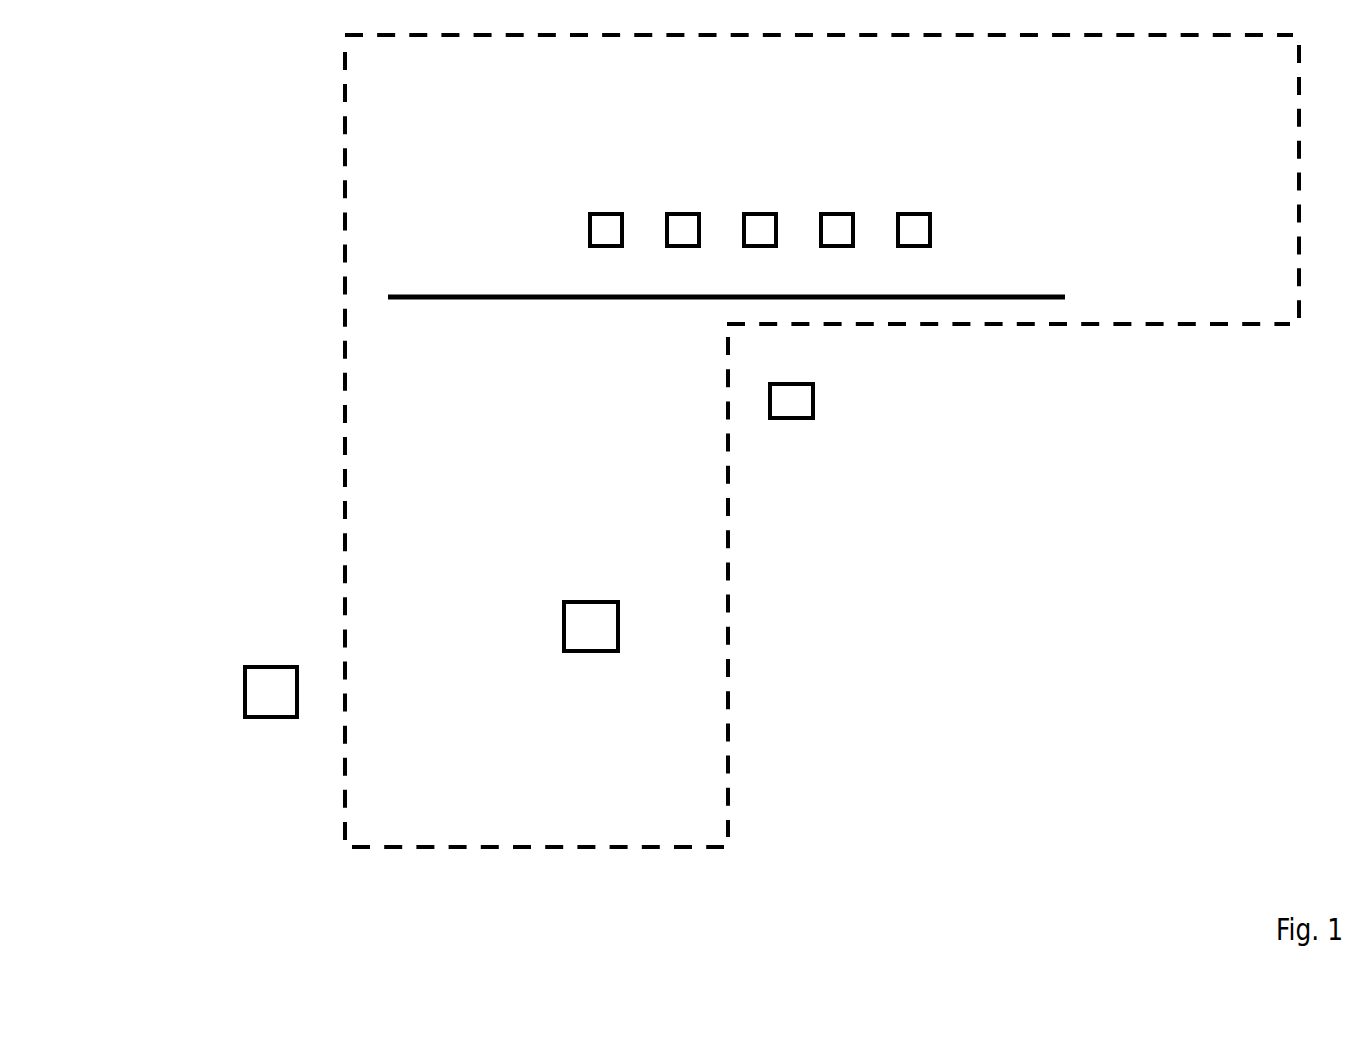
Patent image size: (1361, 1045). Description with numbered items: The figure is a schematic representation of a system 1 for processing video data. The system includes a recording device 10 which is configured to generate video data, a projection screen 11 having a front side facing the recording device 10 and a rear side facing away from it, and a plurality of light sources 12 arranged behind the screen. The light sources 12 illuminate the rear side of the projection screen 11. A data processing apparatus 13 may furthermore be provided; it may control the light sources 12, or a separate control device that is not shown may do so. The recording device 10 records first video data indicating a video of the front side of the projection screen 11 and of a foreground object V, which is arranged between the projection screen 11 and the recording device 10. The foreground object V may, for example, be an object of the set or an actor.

The hydroponic system / installation 1 is at (323, 170).
The recording device 10 is at (582, 653).
The projection screen 11 is at (997, 295).
The light sources 12 is at (609, 212).
The data processing apparatus 13 is at (272, 665).
The foreground object V is at (796, 420).